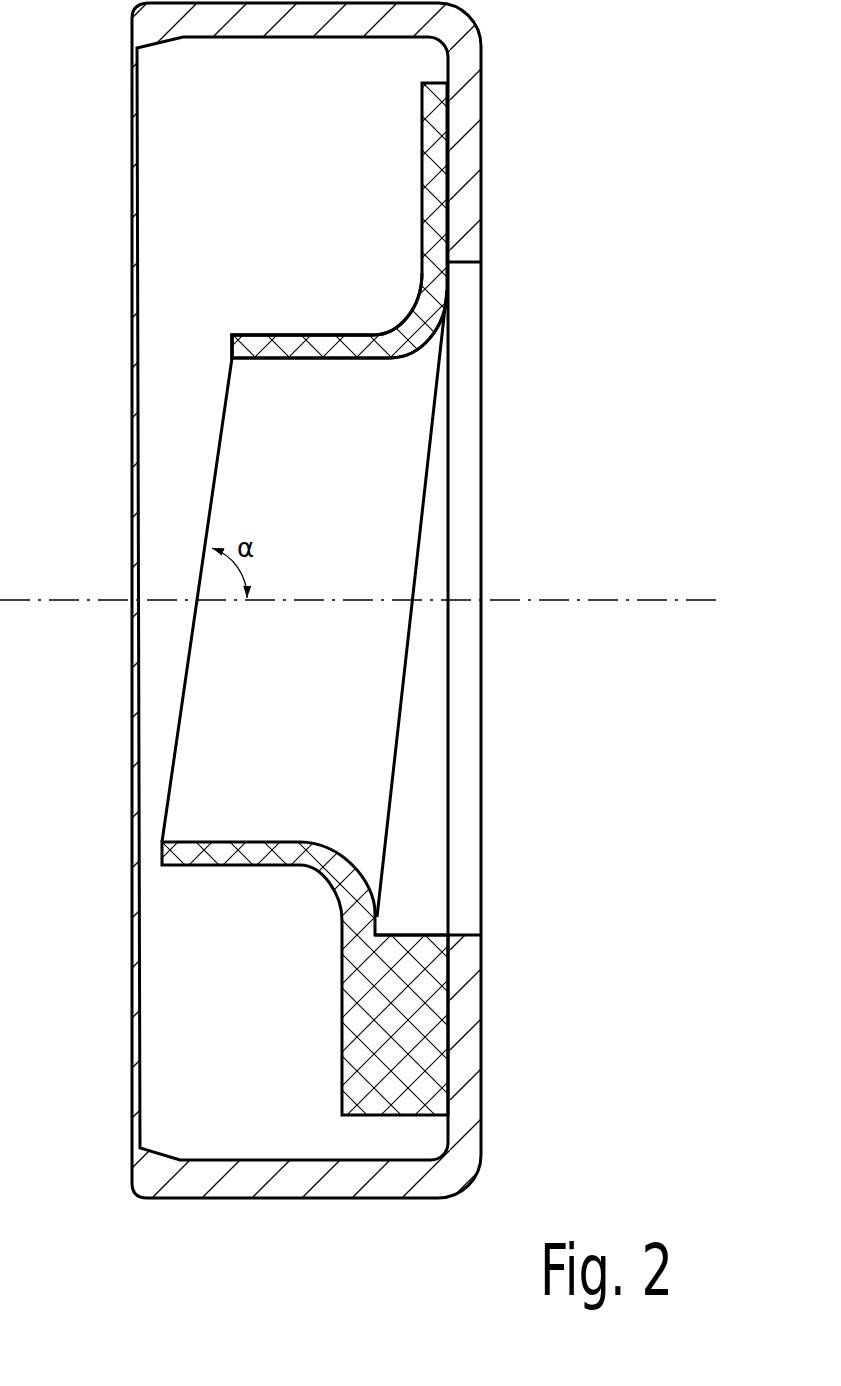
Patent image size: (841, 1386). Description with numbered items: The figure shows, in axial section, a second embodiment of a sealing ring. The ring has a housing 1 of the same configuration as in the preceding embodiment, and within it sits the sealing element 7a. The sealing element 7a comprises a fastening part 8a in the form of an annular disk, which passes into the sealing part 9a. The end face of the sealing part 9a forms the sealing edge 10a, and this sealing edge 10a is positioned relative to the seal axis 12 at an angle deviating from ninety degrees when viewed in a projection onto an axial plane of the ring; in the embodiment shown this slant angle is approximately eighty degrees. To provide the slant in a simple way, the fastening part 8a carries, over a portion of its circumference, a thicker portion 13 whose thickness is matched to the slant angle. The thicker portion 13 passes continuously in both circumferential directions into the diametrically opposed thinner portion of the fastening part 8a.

The housing 1 is at (497, 97).
The sealing element 7a is at (306, 325).
The fastening part 8a is at (437, 187).
The sealing part 9a is at (273, 347).
The sealing edge 10a is at (212, 482).
The seal axis 12 is at (560, 600).
The thicker portion 13 is at (403, 1040).